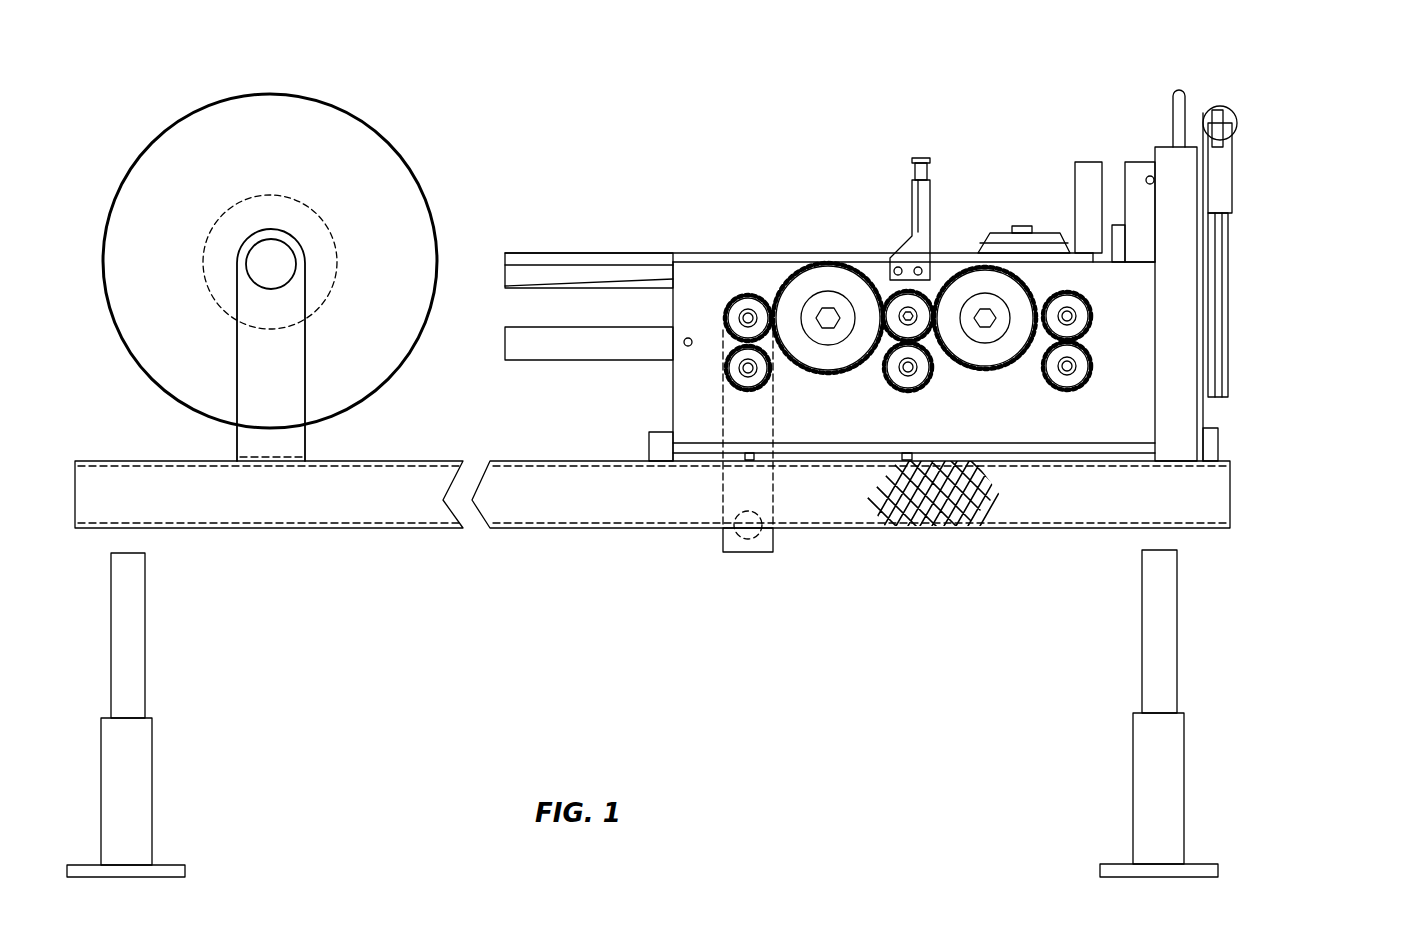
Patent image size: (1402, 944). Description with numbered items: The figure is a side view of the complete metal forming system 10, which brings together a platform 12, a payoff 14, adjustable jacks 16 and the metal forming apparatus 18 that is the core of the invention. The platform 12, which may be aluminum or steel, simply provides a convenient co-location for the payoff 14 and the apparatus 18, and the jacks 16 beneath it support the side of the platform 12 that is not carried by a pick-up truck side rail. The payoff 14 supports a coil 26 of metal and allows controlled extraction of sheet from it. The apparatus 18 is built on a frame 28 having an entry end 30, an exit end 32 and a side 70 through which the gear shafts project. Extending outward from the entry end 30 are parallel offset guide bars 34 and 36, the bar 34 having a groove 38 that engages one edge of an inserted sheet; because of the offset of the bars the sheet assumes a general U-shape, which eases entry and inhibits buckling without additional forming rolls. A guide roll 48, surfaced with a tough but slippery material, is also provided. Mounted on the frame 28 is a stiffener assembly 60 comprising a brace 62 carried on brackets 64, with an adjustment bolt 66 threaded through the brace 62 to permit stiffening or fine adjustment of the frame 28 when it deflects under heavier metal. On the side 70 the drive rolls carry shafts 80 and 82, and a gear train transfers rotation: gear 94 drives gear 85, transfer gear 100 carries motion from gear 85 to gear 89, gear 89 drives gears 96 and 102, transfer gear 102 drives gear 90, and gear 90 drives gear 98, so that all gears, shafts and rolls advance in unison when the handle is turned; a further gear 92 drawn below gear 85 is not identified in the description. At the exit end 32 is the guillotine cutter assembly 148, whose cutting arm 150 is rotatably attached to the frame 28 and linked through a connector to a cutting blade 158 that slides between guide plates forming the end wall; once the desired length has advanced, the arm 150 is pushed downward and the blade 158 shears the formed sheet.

The metal forming system 10 is at (648, 628).
The platform 12 is at (597, 512).
The payoff 14 is at (247, 403).
The adjustable jacks 16 is at (133, 622).
The metal forming apparatus 18 is at (888, 321).
The coil 26 is at (363, 140).
The frame 28 is at (722, 262).
The entry end 30 is at (663, 416).
The exit end 32 is at (1210, 430).
The guide bar 34 is at (540, 262).
The guide bar 36 is at (540, 345).
The groove 38 is at (620, 278).
The guide roll 48 is at (1000, 235).
The stiffener assembly 60 is at (940, 184).
The brace 62 is at (932, 205).
The brackets 64 is at (912, 252).
The adjustment bolt 66 is at (920, 162).
The side 70 is at (869, 349).
The shaft 80 is at (749, 316).
The shaft 82 is at (752, 382).
The gear 85 is at (738, 305).
The gear 89 is at (900, 325).
The gear 90 is at (1078, 306).
The lower pinion gear 92 is at (735, 369).
The gear 94 is at (738, 357).
The gear 96 is at (910, 380).
The gear 98 is at (1080, 368).
The transfer gear 100 is at (807, 275).
The transfer gear 102 is at (978, 360).
The guillotine cutter assembly 148 is at (1294, 237).
The cutting arm 150 is at (1220, 108).
The cutting blade 158 is at (1218, 270).